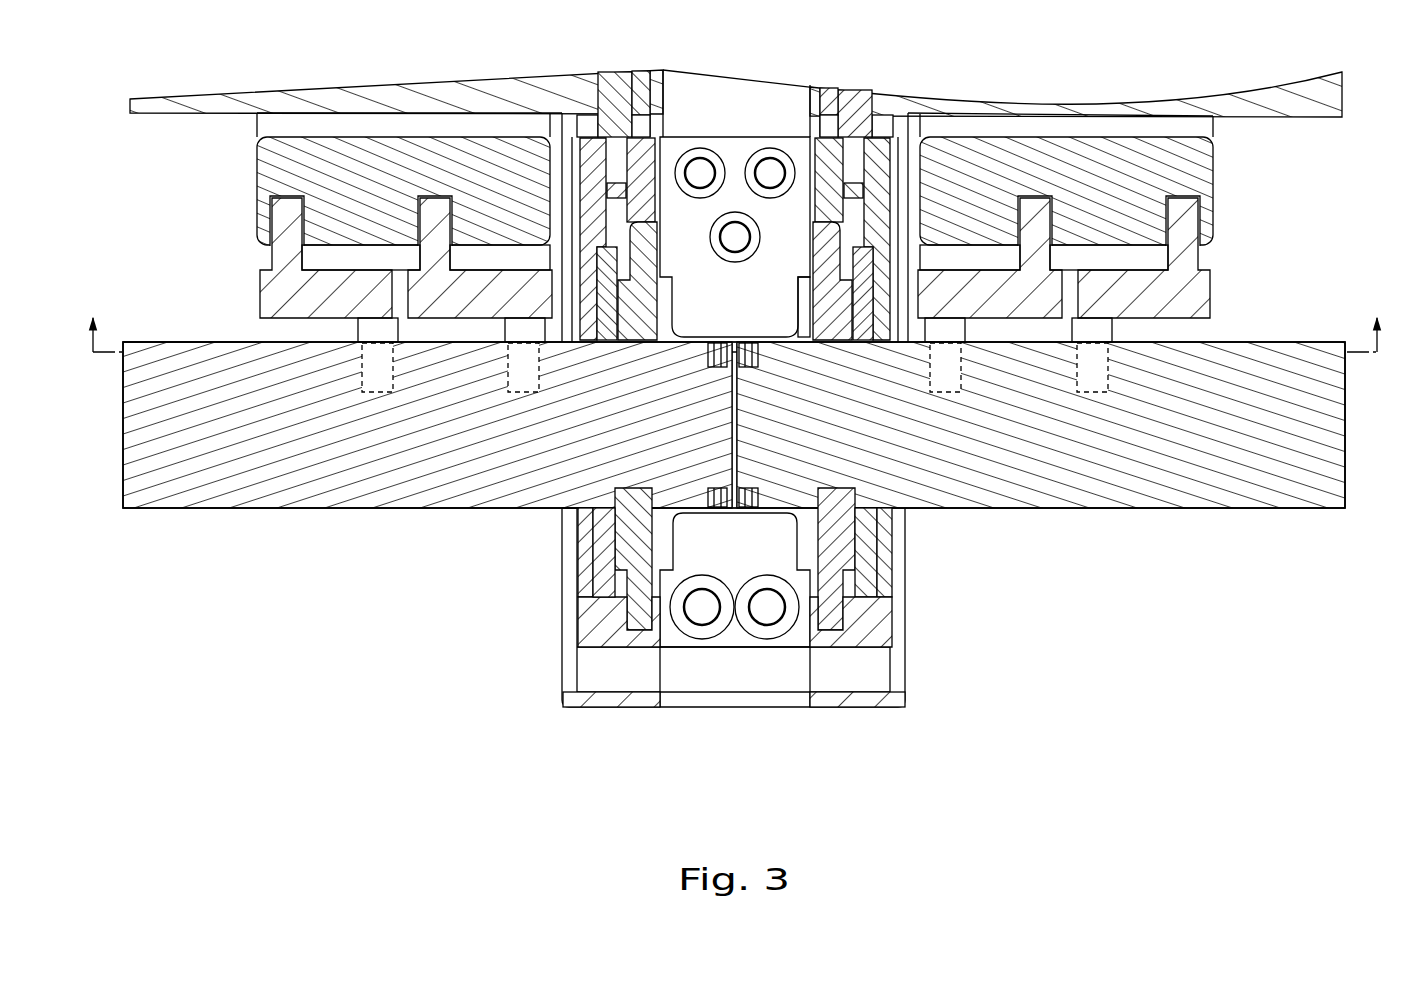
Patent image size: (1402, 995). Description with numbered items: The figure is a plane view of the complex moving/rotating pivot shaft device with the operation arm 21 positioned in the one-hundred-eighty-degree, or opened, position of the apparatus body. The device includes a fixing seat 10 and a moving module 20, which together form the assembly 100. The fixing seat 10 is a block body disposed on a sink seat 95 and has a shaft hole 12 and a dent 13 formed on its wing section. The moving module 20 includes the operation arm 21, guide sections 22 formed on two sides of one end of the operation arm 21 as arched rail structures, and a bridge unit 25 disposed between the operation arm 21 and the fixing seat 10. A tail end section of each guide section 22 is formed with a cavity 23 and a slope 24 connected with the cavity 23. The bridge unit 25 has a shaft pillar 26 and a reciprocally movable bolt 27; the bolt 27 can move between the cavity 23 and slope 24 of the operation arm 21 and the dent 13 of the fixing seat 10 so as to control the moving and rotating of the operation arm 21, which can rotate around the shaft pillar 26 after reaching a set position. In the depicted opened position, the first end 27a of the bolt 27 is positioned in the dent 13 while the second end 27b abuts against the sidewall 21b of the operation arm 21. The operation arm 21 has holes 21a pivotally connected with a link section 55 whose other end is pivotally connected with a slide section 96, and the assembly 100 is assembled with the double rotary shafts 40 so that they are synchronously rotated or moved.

The fixing seat 10 is at (738, 135).
The shaft hole 12 is at (597, 640).
The dent 13 is at (598, 583).
The moving module 20 is at (1064, 550).
The operation arm 21 is at (231, 512).
The hole 21a is at (393, 392).
The sidewall 21b is at (215, 340).
The guide section 22 is at (597, 483).
The cavity 23 is at (707, 518).
The slope 24 is at (765, 525).
The bridge unit 25 is at (805, 298).
The shaft pillar 26 is at (817, 250).
The bolt 27 is at (890, 562).
The first end 27a is at (885, 612).
The second end 27b is at (890, 532).
The rotary shaft 40 is at (615, 90).
The link section 55 is at (1215, 290).
The sink seat 95 is at (618, 712).
The slide section 96 is at (243, 123).
The assembly 100 is at (437, 608).